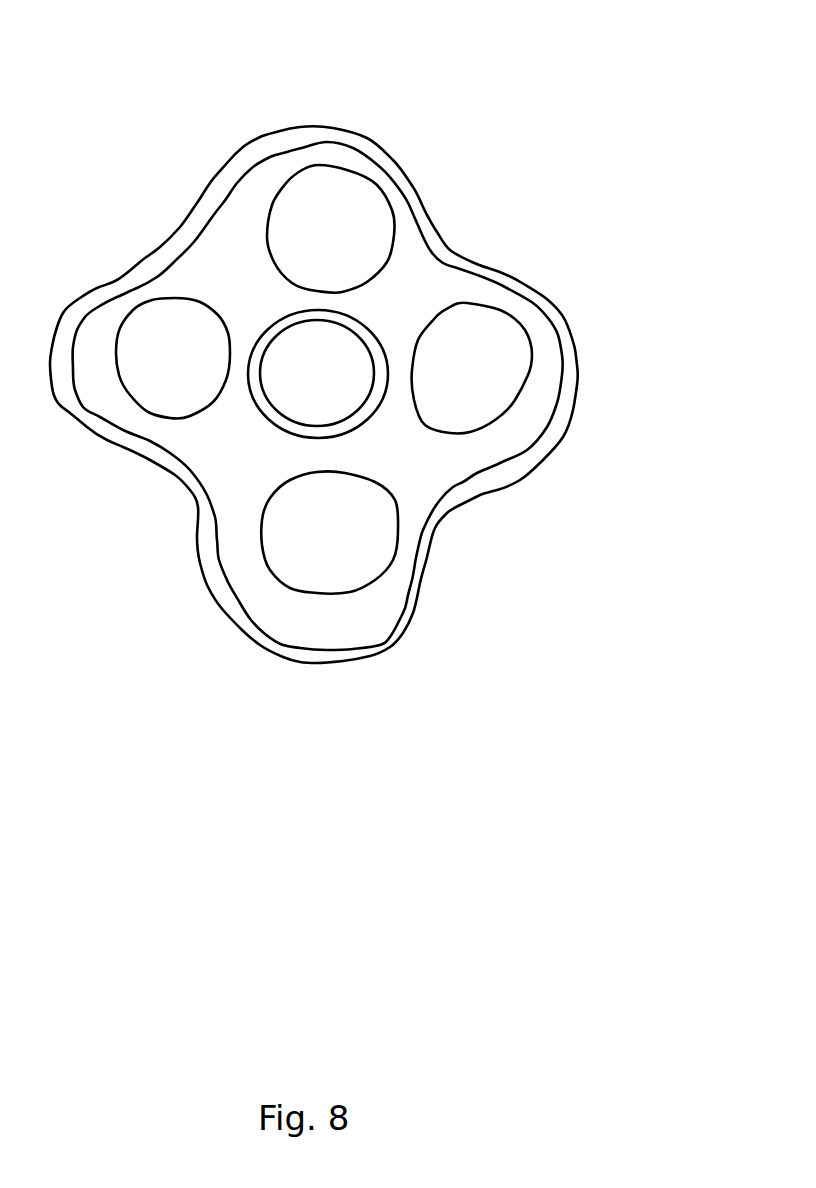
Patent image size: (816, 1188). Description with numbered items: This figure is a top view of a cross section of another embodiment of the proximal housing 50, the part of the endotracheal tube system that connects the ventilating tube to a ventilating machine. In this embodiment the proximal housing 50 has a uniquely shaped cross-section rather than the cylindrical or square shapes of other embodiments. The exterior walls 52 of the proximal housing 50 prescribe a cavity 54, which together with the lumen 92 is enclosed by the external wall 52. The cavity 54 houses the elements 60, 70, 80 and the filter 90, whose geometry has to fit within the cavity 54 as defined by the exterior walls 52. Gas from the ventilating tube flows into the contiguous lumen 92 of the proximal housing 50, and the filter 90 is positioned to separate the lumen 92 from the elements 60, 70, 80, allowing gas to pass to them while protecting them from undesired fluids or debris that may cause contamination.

The proximal housing 50 is at (560, 313).
The external wall 52 is at (530, 457).
The cavity 54 is at (367, 396).
The element 60 is at (302, 167).
The element 70 is at (530, 377).
The element 80 is at (377, 570).
The filter 90 is at (378, 343).
The lumen 92 is at (337, 363).